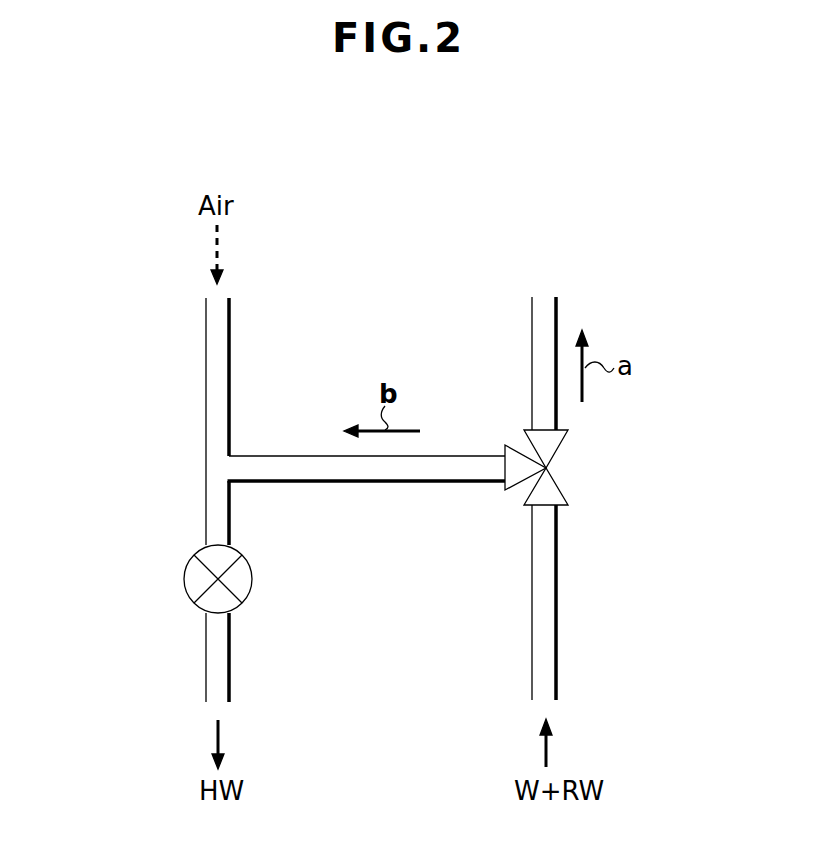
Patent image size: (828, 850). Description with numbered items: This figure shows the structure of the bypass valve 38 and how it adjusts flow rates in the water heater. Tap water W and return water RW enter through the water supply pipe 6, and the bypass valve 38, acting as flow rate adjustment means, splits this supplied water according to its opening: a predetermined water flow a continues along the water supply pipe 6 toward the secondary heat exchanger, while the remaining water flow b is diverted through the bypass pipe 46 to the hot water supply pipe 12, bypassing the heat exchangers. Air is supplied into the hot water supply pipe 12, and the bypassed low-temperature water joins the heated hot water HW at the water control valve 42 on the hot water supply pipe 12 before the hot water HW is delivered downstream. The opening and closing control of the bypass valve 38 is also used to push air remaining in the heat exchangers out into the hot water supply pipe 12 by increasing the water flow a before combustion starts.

The hot water supply pipe 12 is at (206, 380).
The bypass pipe 46 is at (378, 483).
The bypass valve 38 is at (560, 448).
The water control valve 42 is at (184, 580).
The water supply pipe 6 is at (558, 605).